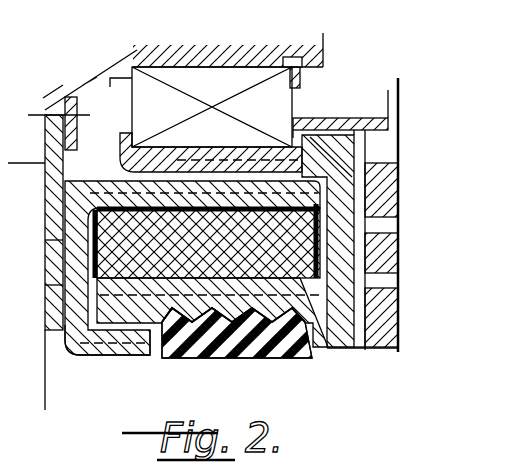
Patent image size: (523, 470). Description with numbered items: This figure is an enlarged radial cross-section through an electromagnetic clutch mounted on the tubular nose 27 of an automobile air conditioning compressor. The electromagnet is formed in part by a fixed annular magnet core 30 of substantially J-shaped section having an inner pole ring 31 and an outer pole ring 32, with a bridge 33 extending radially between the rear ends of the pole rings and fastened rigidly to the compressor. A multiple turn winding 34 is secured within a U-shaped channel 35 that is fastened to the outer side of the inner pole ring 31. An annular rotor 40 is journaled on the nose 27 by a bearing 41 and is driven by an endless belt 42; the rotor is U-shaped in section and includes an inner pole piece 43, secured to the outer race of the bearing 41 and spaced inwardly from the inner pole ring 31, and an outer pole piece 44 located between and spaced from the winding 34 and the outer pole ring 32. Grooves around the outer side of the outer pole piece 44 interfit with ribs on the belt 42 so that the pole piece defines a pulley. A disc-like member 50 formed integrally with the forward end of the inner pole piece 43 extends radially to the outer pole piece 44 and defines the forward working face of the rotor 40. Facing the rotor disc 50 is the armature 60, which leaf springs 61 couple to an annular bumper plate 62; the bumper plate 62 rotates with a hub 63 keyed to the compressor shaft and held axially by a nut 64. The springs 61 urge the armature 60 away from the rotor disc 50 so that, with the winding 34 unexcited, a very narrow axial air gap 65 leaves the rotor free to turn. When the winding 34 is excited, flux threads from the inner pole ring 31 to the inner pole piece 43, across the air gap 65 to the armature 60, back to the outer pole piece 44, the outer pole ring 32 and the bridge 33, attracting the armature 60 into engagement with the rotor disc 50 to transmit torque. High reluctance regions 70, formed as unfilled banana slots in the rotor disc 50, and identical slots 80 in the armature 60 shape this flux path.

The tubular nose 27 is at (323, 50).
The magnet core 30 is at (107, 166).
The inner pole ring 31 is at (170, 168).
The outer pole ring 32 is at (112, 358).
The bridge 33 is at (66, 326).
The winding 34 is at (198, 207).
The U-shaped channel 35 is at (226, 229).
The rotor 40 is at (279, 128).
The bearing 41 is at (210, 73).
The endless belt 42 is at (255, 346).
The inner pole piece 43 is at (274, 130).
The outer pole piece 44 is at (188, 340).
The rotor disc 50 is at (403, 178).
The armature 60 is at (399, 324).
The leaf springs 61 is at (45, 253).
The bumper plate 62 is at (26, 164).
The hub 63 is at (34, 244).
The nut 64 is at (33, 299).
The air gap 65 is at (358, 349).
The high reluctance regions 70 is at (372, 163).
The high reluctance slots 80 is at (390, 228).